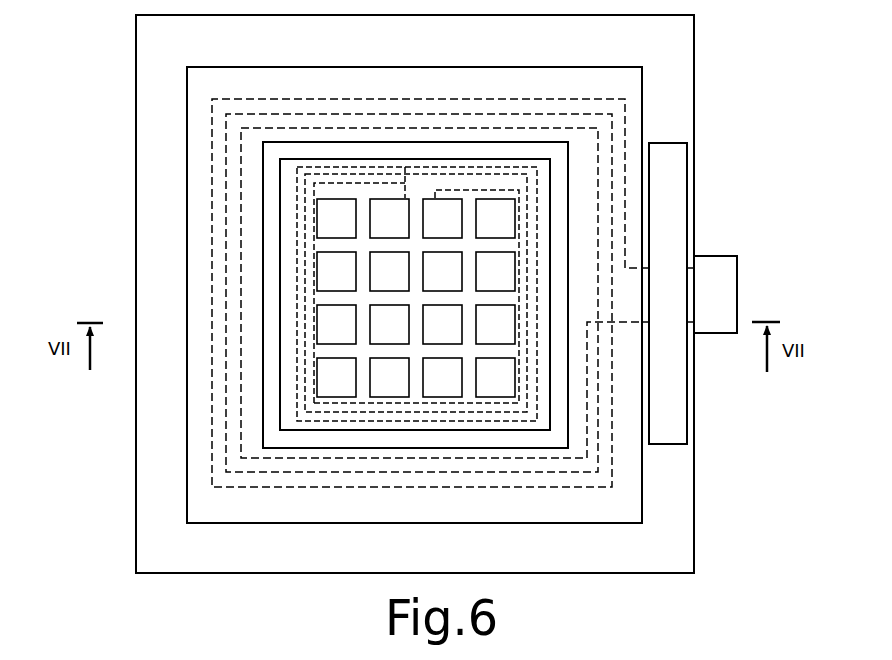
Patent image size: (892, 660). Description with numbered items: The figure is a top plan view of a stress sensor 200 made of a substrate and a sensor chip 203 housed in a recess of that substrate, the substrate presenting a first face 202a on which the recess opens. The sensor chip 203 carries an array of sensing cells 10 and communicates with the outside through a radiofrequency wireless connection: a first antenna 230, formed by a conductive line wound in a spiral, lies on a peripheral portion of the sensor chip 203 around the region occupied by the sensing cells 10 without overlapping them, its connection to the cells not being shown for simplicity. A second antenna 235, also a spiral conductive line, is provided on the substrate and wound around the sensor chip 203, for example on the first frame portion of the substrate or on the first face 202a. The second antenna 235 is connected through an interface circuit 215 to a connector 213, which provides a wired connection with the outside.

The stress sensor 200 is at (102, 163).
The first face 202a is at (150, 117).
The sensor chip 203 is at (288, 387).
The sensing cells 10 is at (323, 229).
The first antenna 230 is at (487, 168).
The second antenna 235 is at (325, 99).
The connector 213 is at (722, 263).
The interface circuit 215 is at (667, 433).